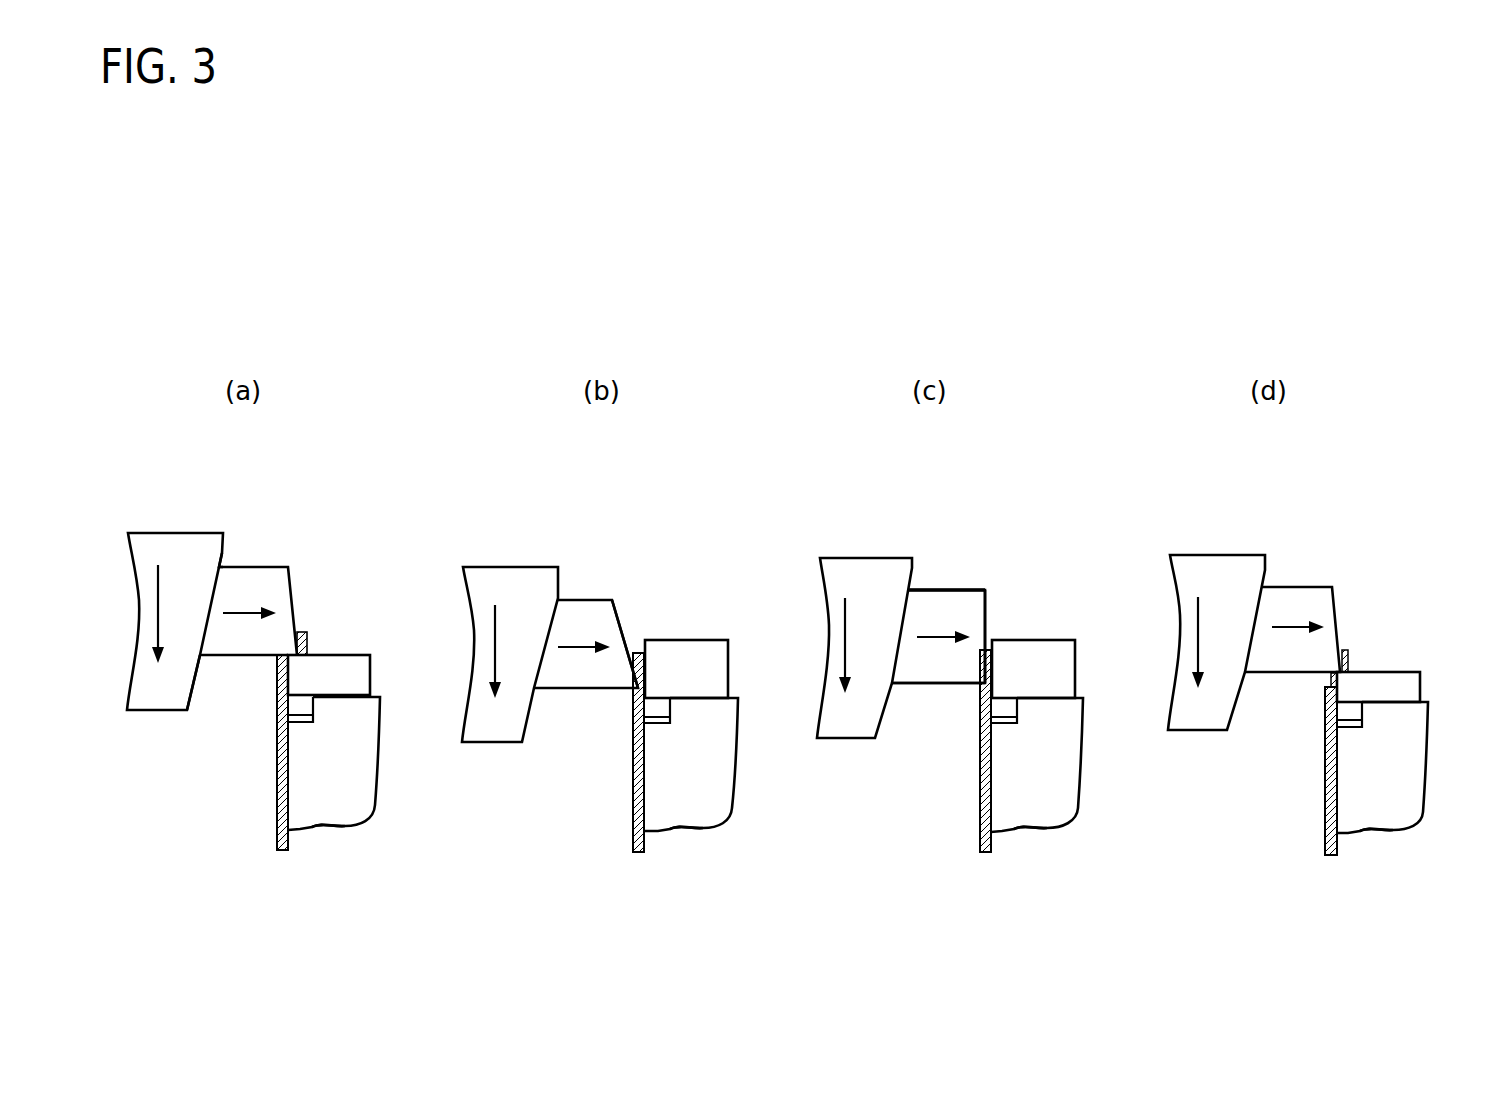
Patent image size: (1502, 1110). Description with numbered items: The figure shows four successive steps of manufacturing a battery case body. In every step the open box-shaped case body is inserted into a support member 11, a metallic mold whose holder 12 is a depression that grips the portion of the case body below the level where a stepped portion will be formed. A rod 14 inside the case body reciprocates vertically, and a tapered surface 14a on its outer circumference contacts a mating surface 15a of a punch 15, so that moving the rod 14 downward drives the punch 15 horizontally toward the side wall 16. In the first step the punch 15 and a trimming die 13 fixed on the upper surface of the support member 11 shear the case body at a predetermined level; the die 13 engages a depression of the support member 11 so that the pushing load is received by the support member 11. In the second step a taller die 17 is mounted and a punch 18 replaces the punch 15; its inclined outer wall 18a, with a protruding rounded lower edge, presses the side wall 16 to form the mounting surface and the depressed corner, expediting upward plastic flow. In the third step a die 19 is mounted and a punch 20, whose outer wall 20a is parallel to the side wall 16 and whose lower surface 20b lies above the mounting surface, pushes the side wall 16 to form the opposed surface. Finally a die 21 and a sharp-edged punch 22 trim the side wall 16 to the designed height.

The support member 11 is at (345, 813).
The holder 12 is at (295, 774).
The trimming die 13 is at (347, 670).
The rod 14 is at (183, 547).
The tapered surface 14a is at (195, 683).
The punch 15 is at (270, 578).
The mating surface 15a is at (222, 568).
The side wall 16 is at (282, 823).
The die 17 is at (703, 652).
The punch 18 is at (602, 607).
The outer wall 18a is at (620, 618).
The die 19 is at (1042, 652).
The punch 20 is at (947, 603).
The outer wall 20a is at (988, 607).
The lower surface 20b is at (933, 688).
The die 21 is at (1385, 682).
The punch 22 is at (1290, 597).